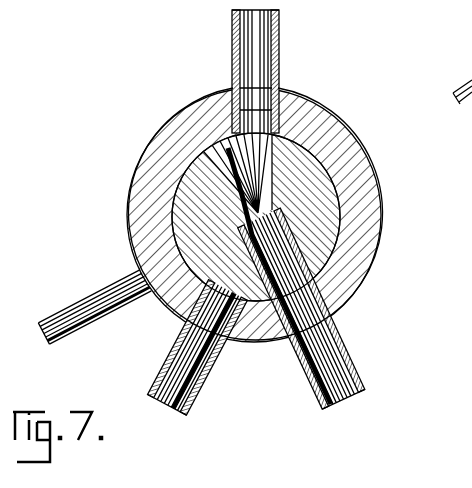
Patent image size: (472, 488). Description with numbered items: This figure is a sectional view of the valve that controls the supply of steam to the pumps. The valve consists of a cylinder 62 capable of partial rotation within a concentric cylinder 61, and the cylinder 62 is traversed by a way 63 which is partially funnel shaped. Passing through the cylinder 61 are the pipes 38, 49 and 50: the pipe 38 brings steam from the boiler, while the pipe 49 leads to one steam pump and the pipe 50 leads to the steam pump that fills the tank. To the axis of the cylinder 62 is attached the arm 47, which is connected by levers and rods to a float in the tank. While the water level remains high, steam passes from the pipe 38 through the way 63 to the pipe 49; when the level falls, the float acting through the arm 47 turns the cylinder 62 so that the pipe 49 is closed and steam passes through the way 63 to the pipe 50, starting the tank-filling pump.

The pipe 38 is at (275, 71).
The arm 47 is at (90, 303).
The pipe 49 is at (313, 308).
The pipe 50 is at (188, 347).
The concentric cylinder 61 is at (471, 192).
The cylinder 62 is at (335, 235).
The way 63 is at (236, 157).